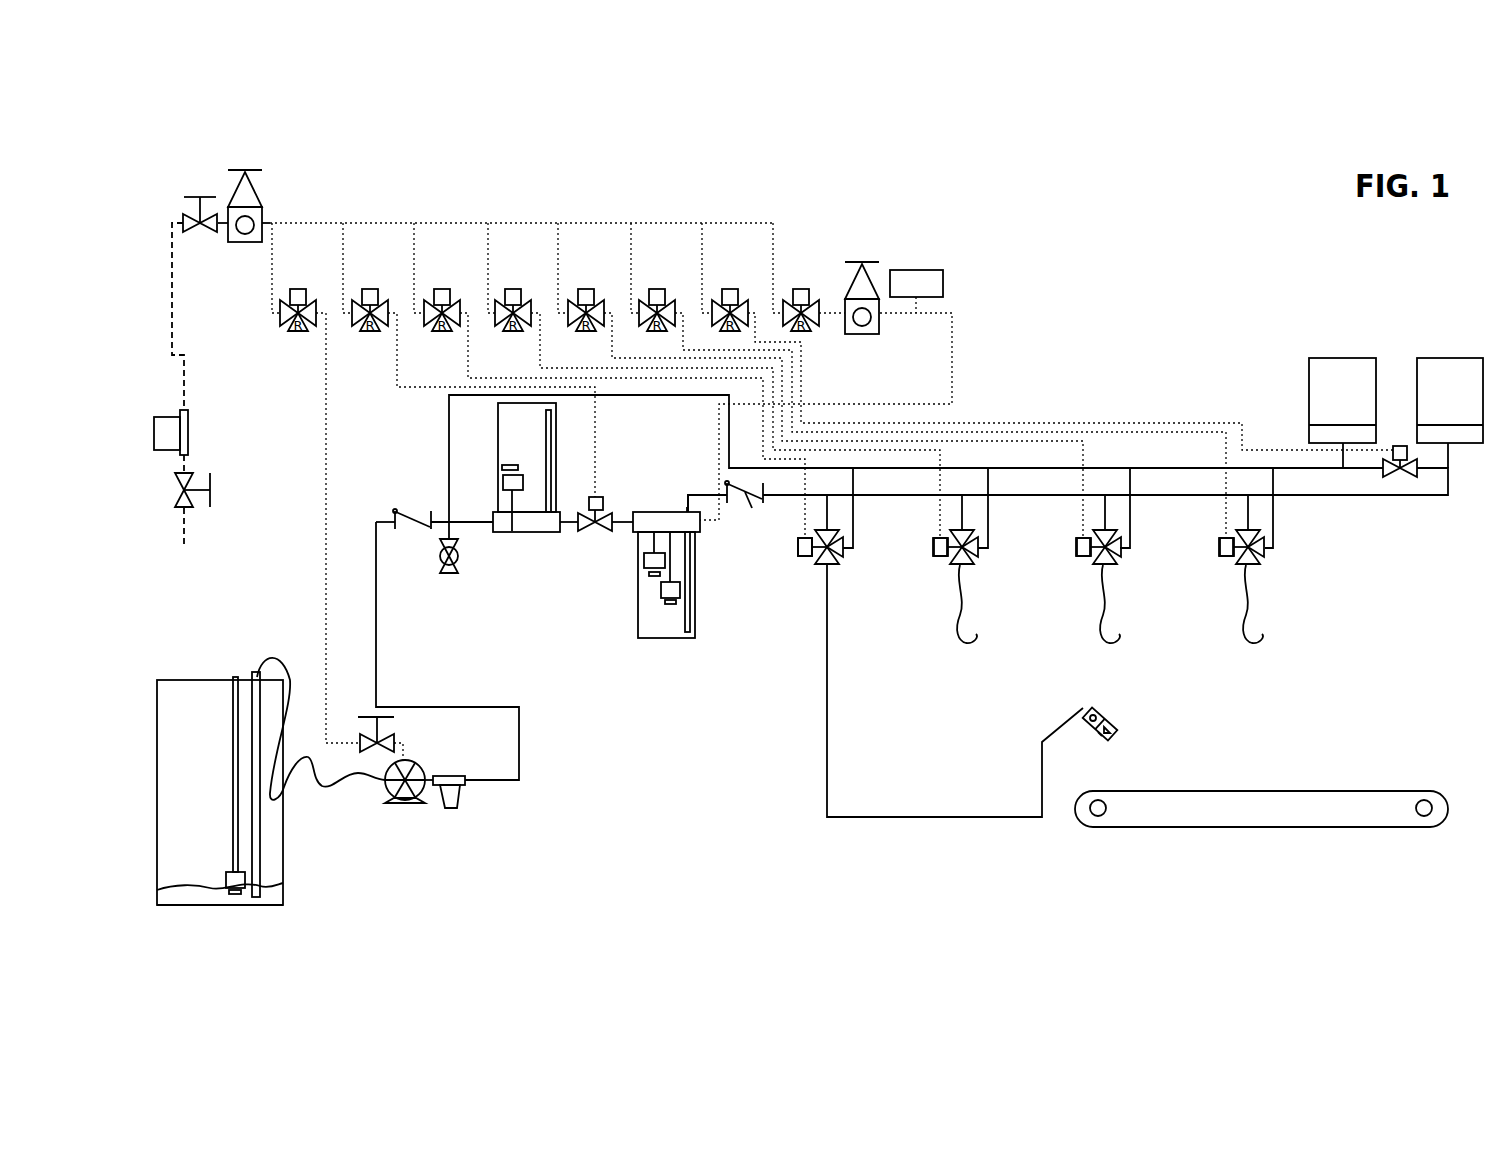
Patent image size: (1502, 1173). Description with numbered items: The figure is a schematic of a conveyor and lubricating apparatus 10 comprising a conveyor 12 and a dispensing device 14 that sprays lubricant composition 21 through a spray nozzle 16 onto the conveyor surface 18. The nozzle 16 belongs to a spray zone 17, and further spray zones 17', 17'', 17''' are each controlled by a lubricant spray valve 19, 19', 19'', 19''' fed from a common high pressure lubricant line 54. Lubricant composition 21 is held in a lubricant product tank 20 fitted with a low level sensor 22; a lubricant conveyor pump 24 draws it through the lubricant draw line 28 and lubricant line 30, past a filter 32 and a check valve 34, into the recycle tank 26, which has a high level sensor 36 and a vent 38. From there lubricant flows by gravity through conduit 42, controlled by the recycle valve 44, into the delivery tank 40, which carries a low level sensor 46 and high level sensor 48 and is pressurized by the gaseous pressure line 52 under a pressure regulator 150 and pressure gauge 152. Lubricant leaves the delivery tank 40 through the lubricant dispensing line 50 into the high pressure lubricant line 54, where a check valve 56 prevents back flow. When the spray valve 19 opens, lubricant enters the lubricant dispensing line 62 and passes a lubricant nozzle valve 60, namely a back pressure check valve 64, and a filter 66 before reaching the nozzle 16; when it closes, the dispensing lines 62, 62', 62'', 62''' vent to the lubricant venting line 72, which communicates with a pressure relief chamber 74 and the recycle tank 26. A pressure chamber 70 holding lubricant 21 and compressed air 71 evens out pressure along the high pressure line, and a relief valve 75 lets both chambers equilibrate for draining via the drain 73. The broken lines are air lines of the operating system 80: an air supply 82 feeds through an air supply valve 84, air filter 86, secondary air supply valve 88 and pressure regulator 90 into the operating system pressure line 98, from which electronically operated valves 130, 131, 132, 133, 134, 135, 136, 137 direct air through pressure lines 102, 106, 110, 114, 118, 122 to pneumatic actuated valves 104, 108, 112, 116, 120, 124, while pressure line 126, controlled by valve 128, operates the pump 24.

The conveyor and lubricating apparatus 10 is at (1151, 199).
The conveyor 12 is at (1250, 823).
The dispensing device 14 is at (702, 826).
The spray nozzle 16 is at (1114, 730).
The spray zone 17 is at (885, 889).
The spray zone 17' is at (949, 675).
The spray zone 17'' is at (1066, 677).
The spray zone 17''' is at (1218, 682).
The conveyor surface 18 is at (1265, 790).
The lubricant spray valve 19 is at (809, 565).
The lubricant spray valve 19' is at (971, 549).
The lubricant spray valve 19'' is at (1115, 549).
The lubricant spray valve 19''' is at (1263, 550).
The lubricant product tank 20 is at (284, 860).
The lubricant composition 21 is at (183, 897).
The low level sensor 22 is at (236, 676).
The lubricant conveyor pump 24 is at (420, 769).
The recycle tank 26 is at (557, 456).
The lubricant draw line 28 is at (262, 873).
The lubricant line 30 is at (376, 608).
The filter 32 is at (462, 795).
The check valve 34 is at (414, 527).
The high level sensor 36 is at (512, 531).
The vent 38 is at (546, 456).
The delivery tank 40 is at (663, 645).
The conduit 42 is at (625, 528).
The recycle valve 44 is at (596, 530).
The low level sensor 46 is at (670, 512).
The high level sensor 48 is at (652, 512).
The lubricant dispensing line 50 is at (689, 606).
The gaseous pressure line 52 is at (953, 333).
The high pressure lubricant line 54 is at (869, 496).
The check valve 56 is at (748, 497).
The lubricant nozzle valve 60 is at (1092, 732).
The lubricant dispensing line 62 is at (955, 691).
The lubricant dispensing line 62' is at (938, 615).
The lubricant dispensing line 62'' is at (1080, 616).
The lubricant dispensing line 62''' is at (1221, 616).
The back pressure check valve 64 is at (1104, 715).
The filter 66 is at (1100, 738).
The pressure chamber 70 is at (1416, 400).
The compressed air 71 is at (1440, 385).
The lubricant venting line 72 is at (856, 487).
The drain 73 is at (453, 578).
The pressure relief chamber 74 is at (1333, 358).
The relief valve 75 is at (1398, 478).
The operating system 80 is at (737, 189).
The air supply 82 is at (186, 530).
The air supply valve 84 is at (190, 478).
The air filter 86 is at (190, 425).
The secondary air supply valve 88 is at (210, 232).
The pressure regulator 90 is at (253, 187).
The operating system pressure line 98 is at (474, 222).
The pressure line 102 is at (396, 362).
The pneumatic actuated valve 104 is at (590, 498).
The pressure line 106 is at (468, 356).
The pneumatic actuated valve 108 is at (802, 540).
The pressure line 110 is at (540, 350).
The pneumatic actuated valve 112 is at (935, 549).
The pressure line 114 is at (612, 345).
The pneumatic actuated valve 116 is at (1077, 548).
The pressure line 118 is at (683, 341).
The pneumatic actuated valve 120 is at (1220, 547).
The pressure line 122 is at (802, 360).
The pneumatic actuated valve 124 is at (1413, 462).
The pressure line 126 is at (326, 458).
The valve 128 is at (392, 740).
The valve 130 is at (282, 318).
The valve 131 is at (353, 305).
The valve 132 is at (425, 305).
The valve 133 is at (498, 305).
The valve 134 is at (570, 305).
The valve 135 is at (640, 305).
The valve 136 is at (712, 305).
The valve 137 is at (815, 322).
The pressure regulator 150 is at (850, 282).
The pressure gauge 152 is at (945, 273).